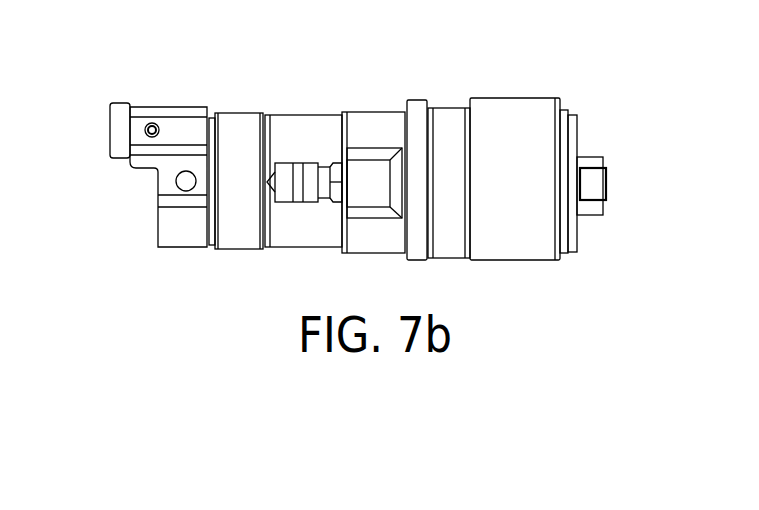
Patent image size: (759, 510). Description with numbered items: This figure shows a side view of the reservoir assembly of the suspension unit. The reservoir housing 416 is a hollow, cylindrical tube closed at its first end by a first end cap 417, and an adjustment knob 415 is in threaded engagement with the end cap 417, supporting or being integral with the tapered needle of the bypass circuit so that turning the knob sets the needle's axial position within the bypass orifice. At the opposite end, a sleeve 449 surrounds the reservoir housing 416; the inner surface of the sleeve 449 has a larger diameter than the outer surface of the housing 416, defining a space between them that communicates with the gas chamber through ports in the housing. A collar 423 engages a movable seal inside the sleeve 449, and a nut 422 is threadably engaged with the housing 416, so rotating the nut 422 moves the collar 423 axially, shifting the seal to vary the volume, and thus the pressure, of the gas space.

The adjustment knob 415 is at (121, 103).
The reservoir housing 416 is at (323, 147).
The first end cap 417 is at (132, 210).
The nut 422 is at (420, 100).
The collar 423 is at (481, 153).
The sleeve 449 is at (544, 154).